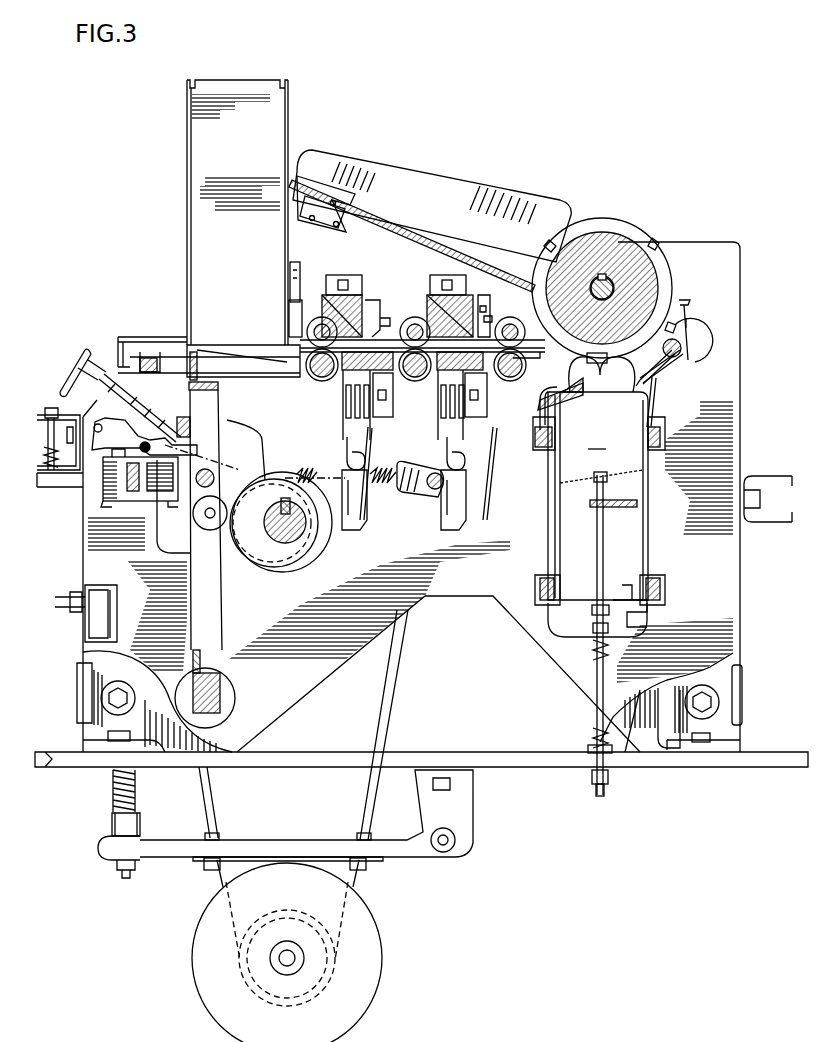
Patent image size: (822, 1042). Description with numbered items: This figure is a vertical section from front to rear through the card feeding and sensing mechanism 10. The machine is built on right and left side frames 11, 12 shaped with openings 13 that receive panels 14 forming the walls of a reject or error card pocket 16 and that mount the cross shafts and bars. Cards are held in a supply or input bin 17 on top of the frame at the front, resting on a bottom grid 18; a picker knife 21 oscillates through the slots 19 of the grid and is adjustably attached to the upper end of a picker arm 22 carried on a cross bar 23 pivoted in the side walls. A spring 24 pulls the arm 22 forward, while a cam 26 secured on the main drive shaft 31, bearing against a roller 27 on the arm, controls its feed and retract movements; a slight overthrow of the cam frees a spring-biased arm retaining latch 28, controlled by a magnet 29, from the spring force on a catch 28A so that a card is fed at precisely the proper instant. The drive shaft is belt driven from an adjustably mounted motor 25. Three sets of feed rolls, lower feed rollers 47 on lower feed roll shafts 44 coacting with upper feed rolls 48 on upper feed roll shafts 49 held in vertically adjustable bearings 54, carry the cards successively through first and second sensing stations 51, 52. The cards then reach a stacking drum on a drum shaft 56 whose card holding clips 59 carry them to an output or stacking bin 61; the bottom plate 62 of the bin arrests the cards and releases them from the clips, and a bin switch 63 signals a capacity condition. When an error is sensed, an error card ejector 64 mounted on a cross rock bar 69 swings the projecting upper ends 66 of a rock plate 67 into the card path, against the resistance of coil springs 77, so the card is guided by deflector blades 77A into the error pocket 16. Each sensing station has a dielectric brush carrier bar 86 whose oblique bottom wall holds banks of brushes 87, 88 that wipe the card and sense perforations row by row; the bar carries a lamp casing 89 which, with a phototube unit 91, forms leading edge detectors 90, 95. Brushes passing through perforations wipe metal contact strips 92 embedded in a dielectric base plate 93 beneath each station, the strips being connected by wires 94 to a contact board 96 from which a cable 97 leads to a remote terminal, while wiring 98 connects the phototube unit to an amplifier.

The card feeding and sensing mechanism 10 is at (749, 386).
The right side frame 11 is at (720, 669).
The left side frame 12 is at (478, 585).
The openings 13 is at (547, 541).
The panels 14 is at (636, 513).
The reject or error card pocket 16 is at (597, 438).
The supply or input bin 17 is at (188, 270).
The bottom grid 18 is at (243, 345).
The slots 19 is at (255, 360).
The picker knife 21 is at (196, 347).
The picker arm 22 is at (214, 611).
The cross bar 23 is at (221, 701).
The spring 24 is at (310, 474).
The motor 25 is at (372, 954).
The cam 26 is at (322, 537).
The roller 27 is at (198, 518).
The arm retaining latch 28 is at (162, 440).
The catch 28A is at (190, 430).
The magnet 29 is at (160, 498).
The main drive shaft 31 is at (305, 535).
The lower feed roll shafts 44 is at (418, 378).
The feed rollers 47 is at (320, 374).
The feed rolls 48 is at (305, 329).
The upper feed roll shafts 49 is at (383, 322).
The first sensing station 51 is at (367, 278).
The second sensing station 52 is at (427, 297).
The bearings 54 is at (639, 241).
The drum shaft 56 is at (600, 282).
The card holding clips 59 is at (549, 248).
The output or stacking bin 61 is at (475, 197).
The bottom plate 62 is at (426, 232).
The bin switch 63 is at (323, 186).
The error card ejector 64 is at (694, 341).
The projecting upper ends 66 is at (685, 310).
The rock plate 67 is at (686, 325).
The cross rock bar 69 is at (683, 352).
The coil springs 77 is at (656, 382).
The deflector blades 77A is at (646, 390).
The brush carrier bar 86 is at (290, 300).
The brushes 87 is at (368, 340).
The brushes 88 is at (487, 318).
The casing 89 is at (376, 320).
The leading edge detector 90 is at (380, 298).
The phototube unit 91 is at (383, 400).
The metal contact strip 92 is at (412, 326).
The base plate 93 is at (375, 383).
The wires 94 is at (350, 418).
The leading edge detector 95 is at (483, 305).
The contact board 96 is at (345, 445).
The cable 97 is at (455, 526).
The wiring 98 is at (369, 443).